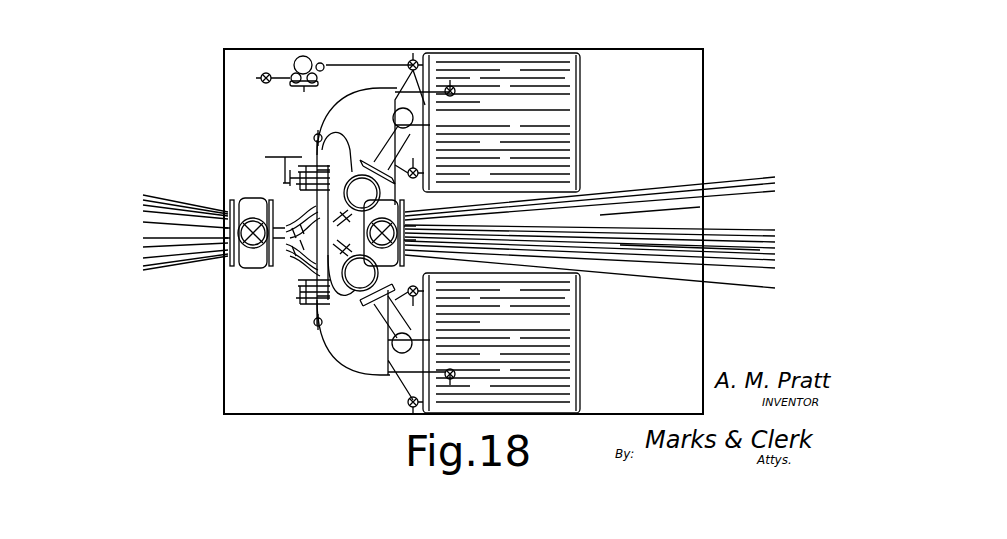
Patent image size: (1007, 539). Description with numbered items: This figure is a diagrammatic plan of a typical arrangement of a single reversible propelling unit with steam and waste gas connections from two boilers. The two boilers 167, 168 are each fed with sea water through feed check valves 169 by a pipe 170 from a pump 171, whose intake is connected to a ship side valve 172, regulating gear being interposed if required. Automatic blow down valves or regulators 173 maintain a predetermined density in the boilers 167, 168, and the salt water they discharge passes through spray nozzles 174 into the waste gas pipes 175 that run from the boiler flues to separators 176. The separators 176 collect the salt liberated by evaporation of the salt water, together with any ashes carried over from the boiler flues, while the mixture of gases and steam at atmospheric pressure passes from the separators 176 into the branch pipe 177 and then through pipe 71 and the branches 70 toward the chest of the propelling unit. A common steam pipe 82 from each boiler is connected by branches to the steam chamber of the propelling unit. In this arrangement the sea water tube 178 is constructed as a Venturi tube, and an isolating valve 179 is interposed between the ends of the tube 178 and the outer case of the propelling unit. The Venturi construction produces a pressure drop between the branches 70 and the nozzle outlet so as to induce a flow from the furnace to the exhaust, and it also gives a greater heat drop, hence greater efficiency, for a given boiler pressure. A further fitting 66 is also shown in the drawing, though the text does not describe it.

The manifold flange 66 is at (297, 230).
The branches 70 is at (314, 150).
The pipe 71 is at (300, 262).
The common steam pipe 82 is at (327, 108).
The boiler 167 is at (488, 112).
The boiler 168 is at (502, 346).
The feed check valve 169 is at (414, 60).
The pipe 170 is at (356, 46).
The pump 171 is at (300, 57).
The ship side valve 172 is at (262, 75).
The automatic blow down valve 173 is at (418, 175).
The spray nozzle 174 is at (384, 160).
The waste gas pipe 175 is at (380, 166).
The separator 176 is at (356, 233).
The branch pipe 177 is at (316, 268).
The water tube 178 is at (145, 232).
The isolating valve 179 is at (241, 262).